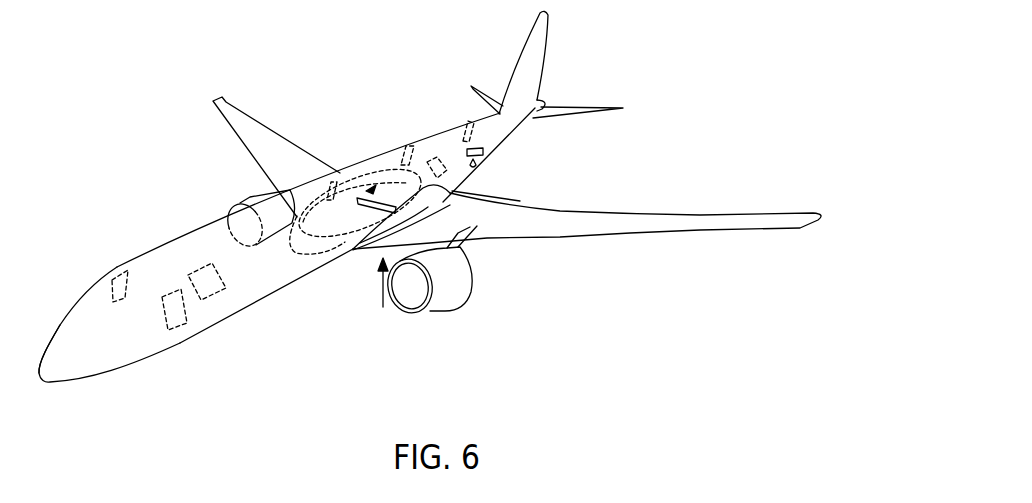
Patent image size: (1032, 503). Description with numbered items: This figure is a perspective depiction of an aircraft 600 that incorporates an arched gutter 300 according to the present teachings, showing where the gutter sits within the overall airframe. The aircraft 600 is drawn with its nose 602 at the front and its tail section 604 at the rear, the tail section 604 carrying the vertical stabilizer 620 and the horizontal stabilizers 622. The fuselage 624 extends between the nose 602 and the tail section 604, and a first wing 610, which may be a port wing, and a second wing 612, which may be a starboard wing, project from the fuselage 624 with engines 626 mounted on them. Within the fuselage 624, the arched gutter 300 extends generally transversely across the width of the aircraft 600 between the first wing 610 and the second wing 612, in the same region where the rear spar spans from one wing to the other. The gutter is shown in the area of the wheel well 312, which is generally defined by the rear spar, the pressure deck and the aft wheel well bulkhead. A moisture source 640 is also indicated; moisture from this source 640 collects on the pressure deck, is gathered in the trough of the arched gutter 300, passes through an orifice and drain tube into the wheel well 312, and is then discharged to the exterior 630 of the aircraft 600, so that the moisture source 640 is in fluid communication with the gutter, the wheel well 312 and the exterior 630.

The aircraft 600 is at (425, 222).
The nose 602 is at (46, 370).
The tail section 604 is at (544, 80).
The first wing 610 is at (640, 225).
The second wing 612 is at (252, 143).
The vertical stabilizer 620 is at (527, 43).
The horizontal stabilizers 622 is at (472, 86).
The fuselage 624 is at (241, 301).
The engines 626 is at (229, 215).
The exterior 630 is at (357, 140).
The moisture source 640 is at (483, 152).
The arched gutter 300 is at (450, 197).
The wheel well 312 is at (382, 301).